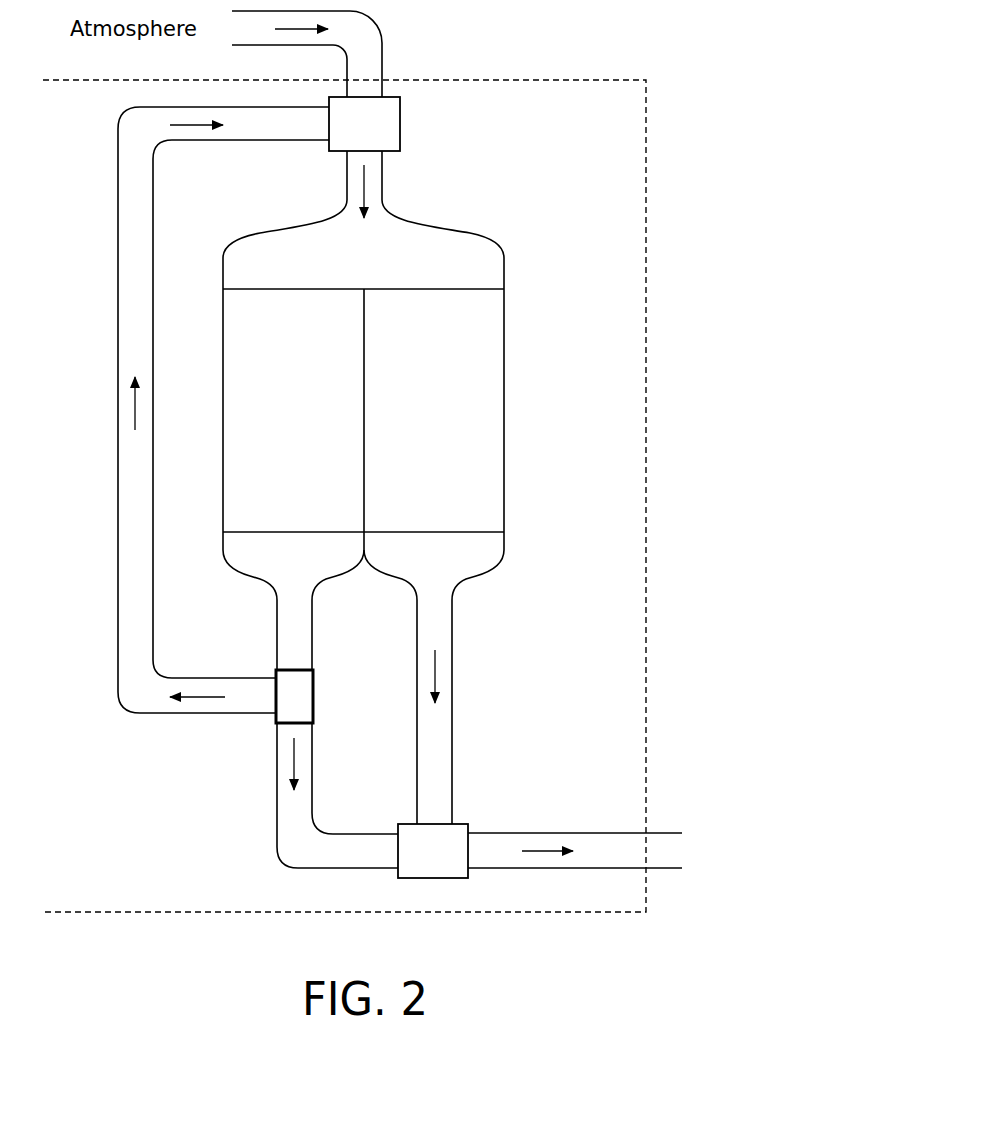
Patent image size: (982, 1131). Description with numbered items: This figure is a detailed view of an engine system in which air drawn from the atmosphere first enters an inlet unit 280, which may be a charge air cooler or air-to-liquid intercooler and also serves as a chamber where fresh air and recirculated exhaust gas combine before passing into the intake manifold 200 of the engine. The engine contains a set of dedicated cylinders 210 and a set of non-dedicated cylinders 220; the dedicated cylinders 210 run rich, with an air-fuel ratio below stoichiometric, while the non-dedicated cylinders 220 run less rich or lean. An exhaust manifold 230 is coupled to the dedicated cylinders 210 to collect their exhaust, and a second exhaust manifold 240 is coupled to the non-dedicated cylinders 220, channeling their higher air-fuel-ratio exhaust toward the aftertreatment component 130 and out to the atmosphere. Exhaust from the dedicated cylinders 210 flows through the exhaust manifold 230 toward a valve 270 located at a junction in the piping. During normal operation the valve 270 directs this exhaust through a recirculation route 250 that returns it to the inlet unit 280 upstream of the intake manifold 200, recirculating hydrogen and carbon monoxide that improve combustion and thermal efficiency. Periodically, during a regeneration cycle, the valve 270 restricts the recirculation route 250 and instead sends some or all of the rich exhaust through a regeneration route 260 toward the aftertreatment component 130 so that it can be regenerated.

The aftertreatment component 130 is at (460, 867).
The intake manifold 200 is at (363, 389).
The set of dedicated cylinders 210 is at (230, 297).
The set of non-dedicated cylinders 220 is at (495, 297).
The exhaust manifold 230 is at (252, 567).
The second exhaust manifold 240 is at (477, 567).
The recirculation route 250 is at (80, 463).
The regeneration route 260 is at (238, 808).
The valve 270 is at (302, 678).
The inlet unit 280 is at (390, 117).